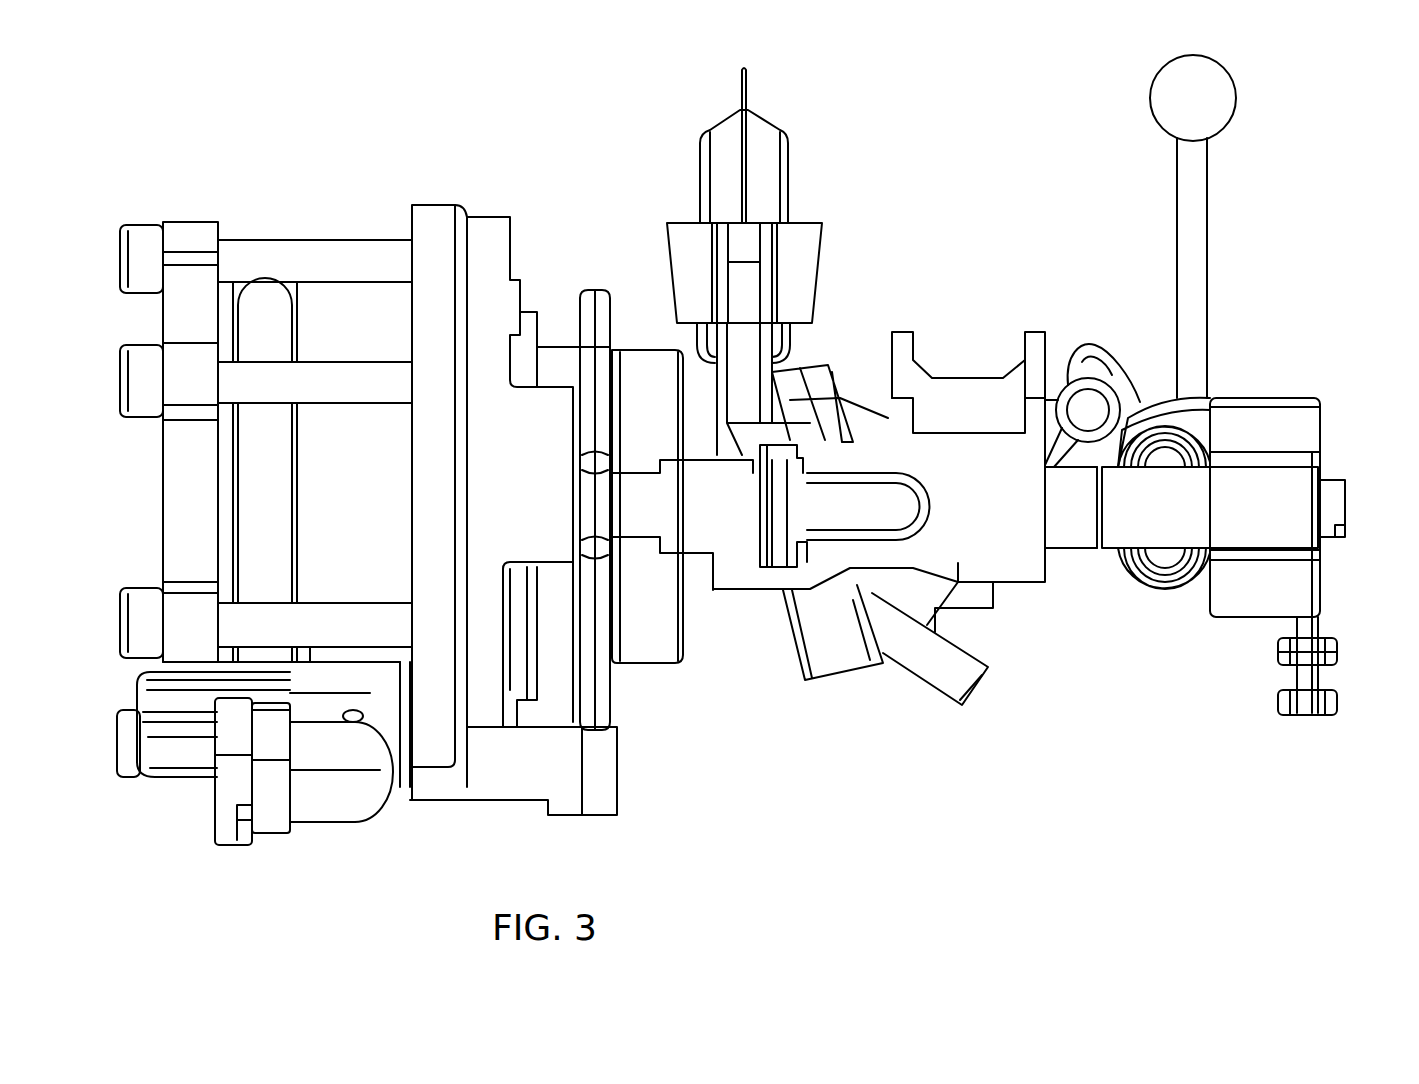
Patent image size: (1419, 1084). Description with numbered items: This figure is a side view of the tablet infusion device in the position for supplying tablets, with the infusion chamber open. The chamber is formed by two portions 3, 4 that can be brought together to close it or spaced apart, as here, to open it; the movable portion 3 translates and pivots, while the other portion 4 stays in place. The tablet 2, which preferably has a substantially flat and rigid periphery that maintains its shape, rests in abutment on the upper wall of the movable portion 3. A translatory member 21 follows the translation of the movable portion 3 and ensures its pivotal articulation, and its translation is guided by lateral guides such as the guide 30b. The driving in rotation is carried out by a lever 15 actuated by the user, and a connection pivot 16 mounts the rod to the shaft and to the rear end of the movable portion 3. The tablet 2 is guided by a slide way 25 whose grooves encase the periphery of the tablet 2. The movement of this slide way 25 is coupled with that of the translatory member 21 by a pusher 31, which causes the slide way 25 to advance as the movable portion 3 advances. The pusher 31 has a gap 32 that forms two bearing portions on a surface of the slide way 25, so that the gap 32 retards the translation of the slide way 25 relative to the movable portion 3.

The tablet 2 is at (763, 150).
The slide way 25 is at (800, 262).
The gap 32 is at (793, 437).
The pusher 31 is at (747, 593).
The movable portion 3 is at (915, 653).
The translatory member 21 is at (1017, 560).
The connection pivot 16 is at (1085, 360).
The lever 15 is at (1188, 223).
The lateral guide 30b is at (1275, 510).
The portion 4 is at (650, 640).